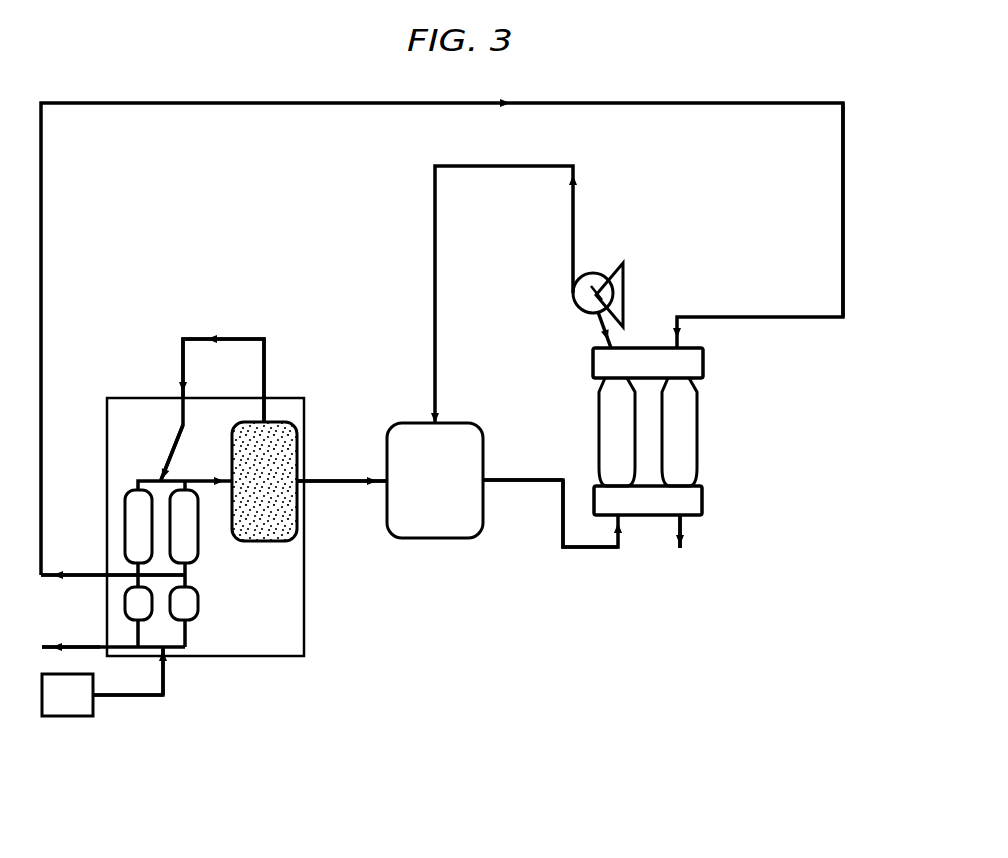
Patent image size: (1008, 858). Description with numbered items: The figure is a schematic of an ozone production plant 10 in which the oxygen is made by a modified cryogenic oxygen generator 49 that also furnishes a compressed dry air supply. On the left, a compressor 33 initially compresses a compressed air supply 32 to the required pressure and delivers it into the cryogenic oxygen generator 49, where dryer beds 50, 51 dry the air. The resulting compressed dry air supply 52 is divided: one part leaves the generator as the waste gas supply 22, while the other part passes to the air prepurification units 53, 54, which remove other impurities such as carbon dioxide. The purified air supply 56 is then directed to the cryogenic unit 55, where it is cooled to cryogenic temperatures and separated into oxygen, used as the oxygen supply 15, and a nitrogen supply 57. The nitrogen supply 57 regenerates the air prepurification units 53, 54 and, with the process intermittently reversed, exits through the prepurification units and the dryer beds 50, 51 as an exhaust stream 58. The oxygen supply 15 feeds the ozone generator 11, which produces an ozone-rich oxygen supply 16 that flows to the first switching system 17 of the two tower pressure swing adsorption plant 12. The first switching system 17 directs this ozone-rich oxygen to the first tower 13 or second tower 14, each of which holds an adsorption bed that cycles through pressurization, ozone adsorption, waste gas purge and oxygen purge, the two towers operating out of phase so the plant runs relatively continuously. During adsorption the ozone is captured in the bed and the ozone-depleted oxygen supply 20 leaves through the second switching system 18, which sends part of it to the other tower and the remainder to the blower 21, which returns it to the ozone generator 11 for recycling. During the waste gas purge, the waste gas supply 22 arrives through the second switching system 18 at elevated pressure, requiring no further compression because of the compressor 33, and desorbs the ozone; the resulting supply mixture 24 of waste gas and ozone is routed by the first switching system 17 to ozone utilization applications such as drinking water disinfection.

The ozone production plant 10 is at (600, 575).
The ozone generator 11 is at (432, 539).
The two tower pressure swing adsorption plant 12 is at (745, 455).
The first tower 13 is at (600, 420).
The second tower 14 is at (697, 422).
The oxygen supply 15 is at (335, 480).
The ozone-rich oxygen supply 16 is at (518, 480).
The first switching system 17 is at (702, 502).
The second switching system 18 is at (703, 365).
The ozone-depleted oxygen supply 20 is at (594, 318).
The blower 21 is at (623, 285).
The waste gas supply 22 is at (845, 213).
The supply mixture of waste gas and ozone 24 is at (682, 518).
The compressed air supply 32 is at (140, 697).
The compressor 33 is at (65, 717).
The modified cryogenic oxygen generator 49 is at (275, 656).
The dryer bed 50 is at (125, 605).
The dryer bed 51 is at (198, 605).
The compressed dry air supply 52 is at (160, 580).
The air prepurification unit 53 is at (125, 530).
The air prepurification unit 54 is at (198, 548).
The cryogenic unit 55 is at (265, 541).
The purified air supply 56 is at (160, 479).
The nitrogen supply 57 is at (183, 372).
The exhaust stream 58 is at (60, 646).